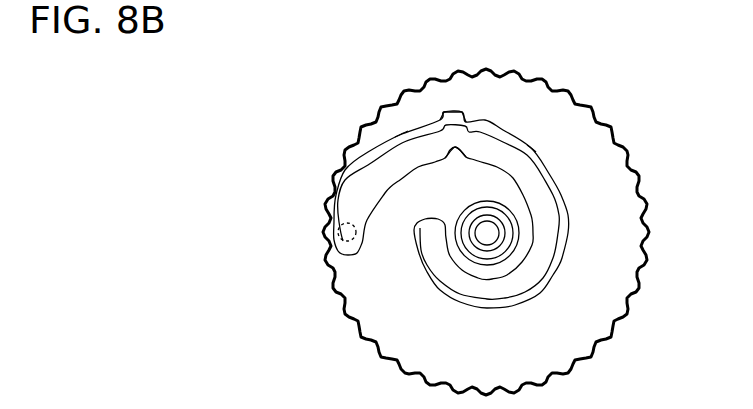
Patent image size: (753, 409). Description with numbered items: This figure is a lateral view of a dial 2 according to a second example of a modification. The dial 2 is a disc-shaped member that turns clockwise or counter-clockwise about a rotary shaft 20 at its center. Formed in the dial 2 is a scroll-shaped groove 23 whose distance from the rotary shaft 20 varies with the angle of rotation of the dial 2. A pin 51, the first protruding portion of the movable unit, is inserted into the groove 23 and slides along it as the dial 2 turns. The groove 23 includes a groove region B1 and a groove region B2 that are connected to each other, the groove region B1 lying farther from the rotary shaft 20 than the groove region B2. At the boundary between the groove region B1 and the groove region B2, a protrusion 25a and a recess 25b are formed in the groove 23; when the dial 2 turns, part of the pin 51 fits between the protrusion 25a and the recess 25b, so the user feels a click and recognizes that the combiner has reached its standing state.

The dial 2 is at (612, 124).
The rotary shaft 20 is at (474, 236).
The groove 23 is at (555, 265).
The protrusion 25a is at (455, 150).
The recess 25b is at (471, 122).
The pin 51 is at (336, 240).
The groove region B1 is at (407, 128).
The groove region B2 is at (533, 149).